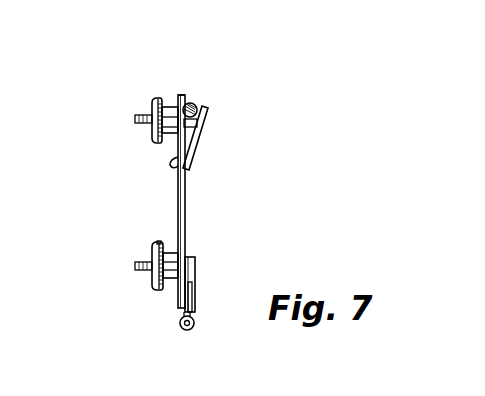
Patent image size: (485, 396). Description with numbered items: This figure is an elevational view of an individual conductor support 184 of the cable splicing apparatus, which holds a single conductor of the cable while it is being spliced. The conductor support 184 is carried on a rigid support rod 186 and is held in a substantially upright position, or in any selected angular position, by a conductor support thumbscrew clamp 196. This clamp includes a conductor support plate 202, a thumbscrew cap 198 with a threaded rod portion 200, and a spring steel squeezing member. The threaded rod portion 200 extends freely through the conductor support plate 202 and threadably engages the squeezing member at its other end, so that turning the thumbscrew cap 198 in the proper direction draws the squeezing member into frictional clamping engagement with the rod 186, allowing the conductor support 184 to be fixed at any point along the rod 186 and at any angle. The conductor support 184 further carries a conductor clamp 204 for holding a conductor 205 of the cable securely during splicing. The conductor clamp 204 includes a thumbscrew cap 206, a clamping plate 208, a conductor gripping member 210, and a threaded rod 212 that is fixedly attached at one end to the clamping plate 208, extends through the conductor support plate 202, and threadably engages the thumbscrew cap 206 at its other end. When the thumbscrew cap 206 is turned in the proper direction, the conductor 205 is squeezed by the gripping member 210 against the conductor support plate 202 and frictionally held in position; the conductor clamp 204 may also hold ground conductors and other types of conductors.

The conductor support 184 is at (186, 92).
The support rod 186 is at (192, 330).
The conductor support thumbscrew clamp 196 is at (151, 248).
The thumbscrew cap 198 is at (159, 242).
The threaded rod portion 200 is at (192, 260).
The conductor support plate 202 is at (178, 183).
The conductor clamp 204 is at (170, 106).
The conductor 205 is at (196, 102).
The thumbscrew cap 206 is at (153, 103).
The clamping plate 208 is at (209, 118).
The conductor gripping member 210 is at (198, 105).
The threaded rod 212 is at (191, 128).